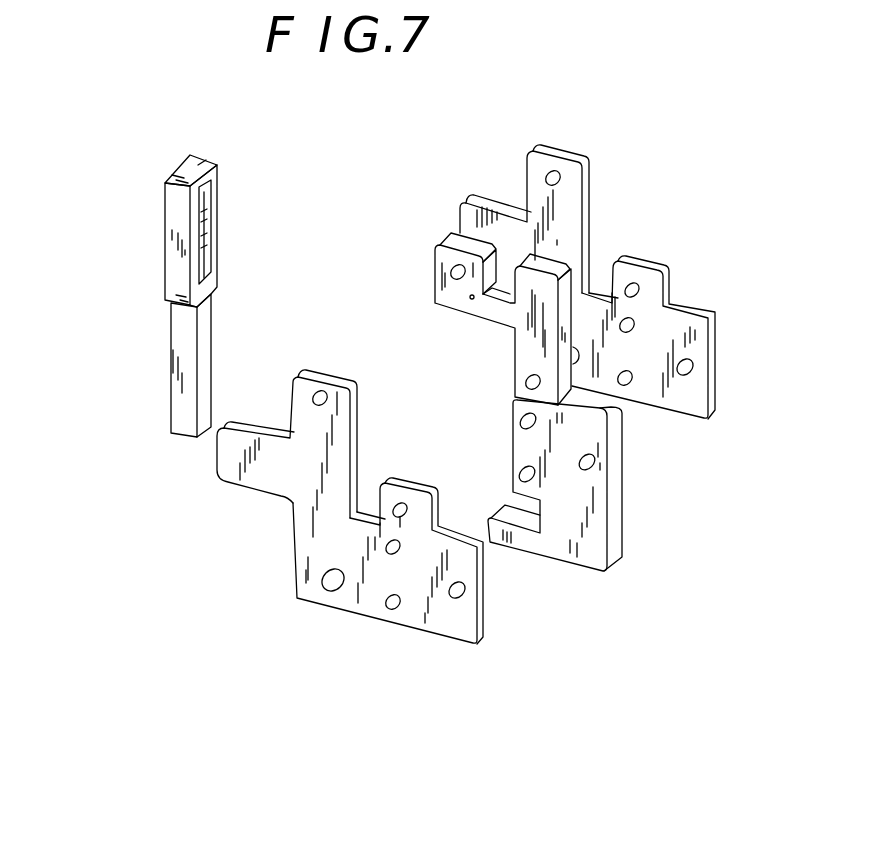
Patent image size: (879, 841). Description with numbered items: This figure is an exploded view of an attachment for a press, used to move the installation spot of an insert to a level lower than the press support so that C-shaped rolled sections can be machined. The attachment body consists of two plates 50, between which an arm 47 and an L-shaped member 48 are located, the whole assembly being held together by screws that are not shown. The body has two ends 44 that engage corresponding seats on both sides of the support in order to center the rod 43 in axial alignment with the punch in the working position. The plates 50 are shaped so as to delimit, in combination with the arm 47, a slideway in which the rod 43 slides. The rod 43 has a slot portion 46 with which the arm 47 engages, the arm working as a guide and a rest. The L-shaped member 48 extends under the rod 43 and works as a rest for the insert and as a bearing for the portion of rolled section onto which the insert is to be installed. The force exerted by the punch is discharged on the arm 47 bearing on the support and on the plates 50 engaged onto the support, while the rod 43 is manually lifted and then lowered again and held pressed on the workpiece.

The rod 43 is at (172, 220).
The ends 44 is at (463, 222).
The slot portion 46 is at (204, 229).
The arm 47 is at (440, 277).
The L-shaped member 48 is at (570, 533).
The plates 50 is at (653, 330).